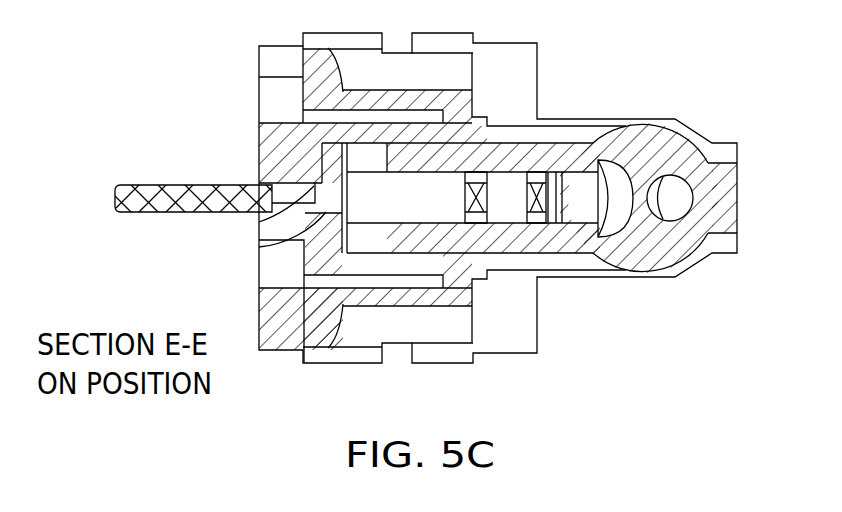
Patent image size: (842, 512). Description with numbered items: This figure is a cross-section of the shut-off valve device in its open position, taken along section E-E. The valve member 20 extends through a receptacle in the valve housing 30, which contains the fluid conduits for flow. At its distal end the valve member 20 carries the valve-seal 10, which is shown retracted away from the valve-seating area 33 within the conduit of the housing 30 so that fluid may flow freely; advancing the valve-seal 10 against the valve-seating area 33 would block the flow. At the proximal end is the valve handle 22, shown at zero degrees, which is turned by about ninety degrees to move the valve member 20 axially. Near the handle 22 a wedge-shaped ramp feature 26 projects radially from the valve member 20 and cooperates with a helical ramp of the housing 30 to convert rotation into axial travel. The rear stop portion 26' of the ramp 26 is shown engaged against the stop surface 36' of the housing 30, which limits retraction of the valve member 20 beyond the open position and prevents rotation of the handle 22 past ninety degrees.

The valve-seal 10 is at (618, 160).
The valve member 20 is at (537, 187).
The valve handle 22 is at (143, 185).
The ramp feature 26 is at (263, 241).
The rear stop portion 26' is at (228, 214).
The valve housing 30 is at (540, 248).
The valve-seating area 33 is at (713, 160).
The stop surface 36' is at (260, 136).